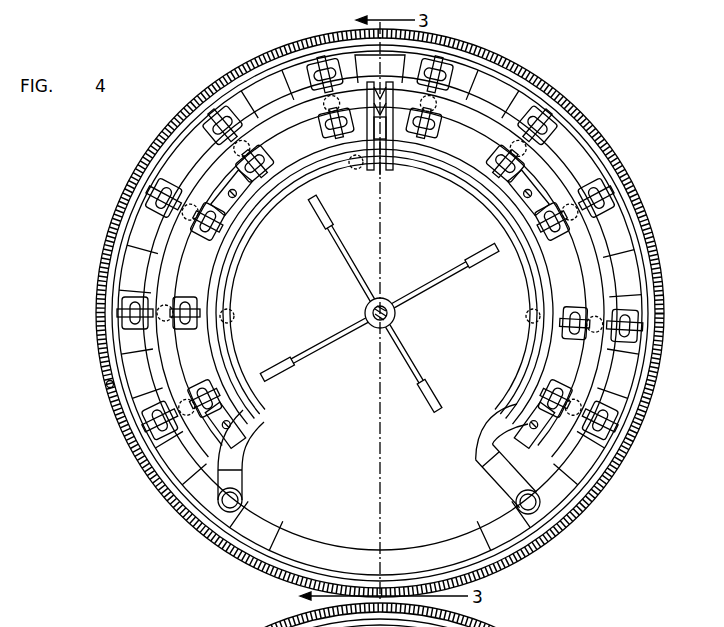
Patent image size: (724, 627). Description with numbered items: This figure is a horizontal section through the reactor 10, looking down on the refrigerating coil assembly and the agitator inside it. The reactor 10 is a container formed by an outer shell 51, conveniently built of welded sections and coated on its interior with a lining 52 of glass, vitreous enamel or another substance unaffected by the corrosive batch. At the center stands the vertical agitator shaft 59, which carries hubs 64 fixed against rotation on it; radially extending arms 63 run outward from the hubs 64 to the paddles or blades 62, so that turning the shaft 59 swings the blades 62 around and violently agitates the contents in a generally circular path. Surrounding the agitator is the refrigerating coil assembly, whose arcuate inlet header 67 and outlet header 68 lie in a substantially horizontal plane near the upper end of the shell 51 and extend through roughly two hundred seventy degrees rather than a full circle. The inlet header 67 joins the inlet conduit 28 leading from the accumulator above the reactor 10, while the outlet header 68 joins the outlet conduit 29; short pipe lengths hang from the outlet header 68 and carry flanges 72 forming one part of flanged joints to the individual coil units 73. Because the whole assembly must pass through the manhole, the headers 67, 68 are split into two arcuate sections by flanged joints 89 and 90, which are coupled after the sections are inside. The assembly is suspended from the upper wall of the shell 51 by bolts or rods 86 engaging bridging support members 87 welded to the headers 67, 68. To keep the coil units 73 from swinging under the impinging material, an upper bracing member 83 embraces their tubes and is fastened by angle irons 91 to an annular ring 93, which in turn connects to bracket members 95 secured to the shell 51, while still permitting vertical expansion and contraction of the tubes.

The reactor 10 is at (104, 255).
The inlet conduit 28 is at (515, 504).
The outlet conduit 29 is at (243, 500).
The outer shell 51 is at (103, 347).
The lining 52 is at (108, 386).
The vertical shaft 59 is at (378, 322).
The paddles or blades 62 is at (318, 207).
The radially extending arms 63 is at (353, 281).
The hub 64 is at (385, 298).
The inlet header 67 is at (472, 441).
The outlet header 68 is at (241, 437).
The flange 72 is at (360, 168).
The individual coil unit 73 is at (270, 104).
The bracing member 83 is at (520, 110).
The bolt 86 is at (222, 186).
The bridging support member 87 is at (252, 212).
The flanged joint 89 is at (383, 170).
The flanged joint 90 is at (384, 92).
The angle iron 91 is at (615, 296).
The annular ring 93 is at (133, 202).
The bracket member 95 is at (146, 460).